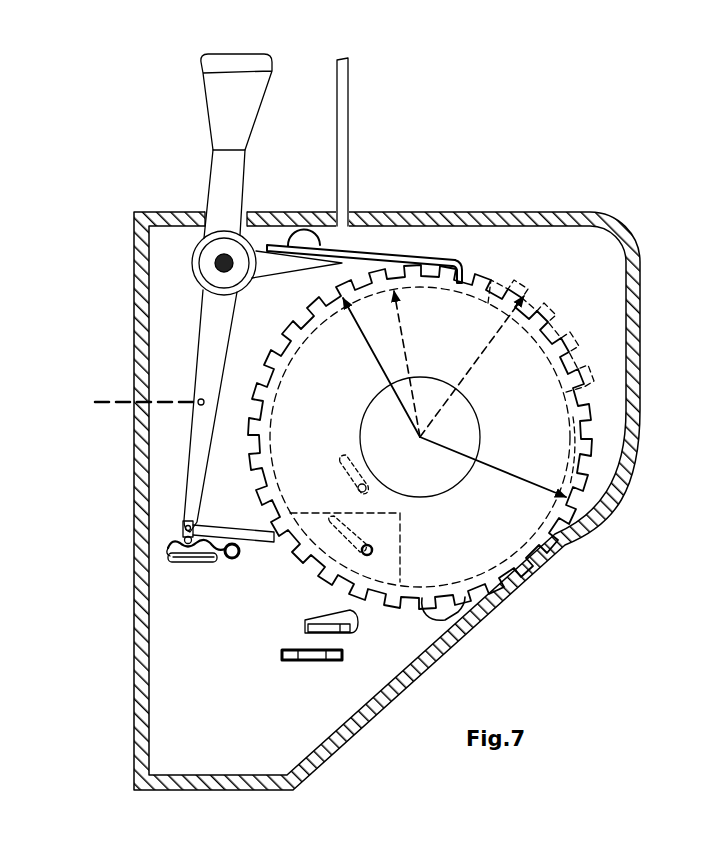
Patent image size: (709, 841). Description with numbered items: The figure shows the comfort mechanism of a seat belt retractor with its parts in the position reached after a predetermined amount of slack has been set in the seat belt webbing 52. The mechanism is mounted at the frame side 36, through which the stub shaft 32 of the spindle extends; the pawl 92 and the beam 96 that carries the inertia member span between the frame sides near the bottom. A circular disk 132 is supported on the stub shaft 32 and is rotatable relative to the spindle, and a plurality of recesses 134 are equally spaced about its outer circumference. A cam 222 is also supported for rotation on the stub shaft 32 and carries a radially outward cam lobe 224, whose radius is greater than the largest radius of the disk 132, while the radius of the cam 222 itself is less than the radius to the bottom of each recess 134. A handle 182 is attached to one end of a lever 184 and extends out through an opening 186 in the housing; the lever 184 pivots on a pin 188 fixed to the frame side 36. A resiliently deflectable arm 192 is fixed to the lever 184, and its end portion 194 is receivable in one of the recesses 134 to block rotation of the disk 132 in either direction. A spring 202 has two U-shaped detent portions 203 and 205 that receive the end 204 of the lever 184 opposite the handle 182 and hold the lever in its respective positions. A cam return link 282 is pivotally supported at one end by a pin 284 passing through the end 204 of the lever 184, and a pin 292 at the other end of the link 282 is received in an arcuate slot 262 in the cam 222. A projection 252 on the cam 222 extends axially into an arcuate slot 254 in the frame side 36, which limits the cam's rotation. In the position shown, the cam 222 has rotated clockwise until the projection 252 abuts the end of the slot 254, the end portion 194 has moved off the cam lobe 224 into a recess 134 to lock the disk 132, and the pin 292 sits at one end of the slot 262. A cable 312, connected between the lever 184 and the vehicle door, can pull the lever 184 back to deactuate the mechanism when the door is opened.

The handle 182 is at (221, 105).
The seat belt webbing 52 is at (343, 108).
The opening 186 is at (186, 212).
The lever 184 is at (208, 343).
The pin 188 is at (215, 272).
The resiliently deflectable arm 192 is at (401, 247).
The end portion 194 is at (466, 274).
The circular disk 132 is at (520, 572).
The stub shaft 32 is at (458, 430).
The cam lobe 224 is at (553, 327).
The cam 222 is at (573, 417).
The cable 312 is at (115, 403).
The projection 252 is at (343, 460).
The arcuate slot 254 is at (350, 482).
The arcuate slot 262 is at (400, 513).
The pin 292 is at (290, 551).
The pin 284 is at (193, 523).
The cam return link 282 is at (270, 542).
The spring 202 is at (165, 549).
The detent portion 203 is at (180, 548).
The end 204 is at (163, 548).
The detent portion 205 is at (216, 556).
The pawl 92 is at (305, 625).
The beam 96 is at (300, 662).
The recesses 134 is at (432, 617).
The frame side 36 is at (228, 737).